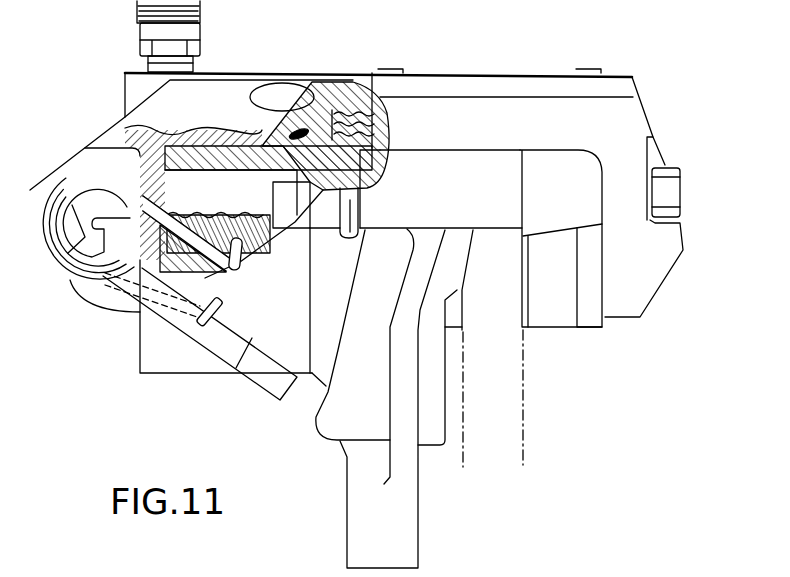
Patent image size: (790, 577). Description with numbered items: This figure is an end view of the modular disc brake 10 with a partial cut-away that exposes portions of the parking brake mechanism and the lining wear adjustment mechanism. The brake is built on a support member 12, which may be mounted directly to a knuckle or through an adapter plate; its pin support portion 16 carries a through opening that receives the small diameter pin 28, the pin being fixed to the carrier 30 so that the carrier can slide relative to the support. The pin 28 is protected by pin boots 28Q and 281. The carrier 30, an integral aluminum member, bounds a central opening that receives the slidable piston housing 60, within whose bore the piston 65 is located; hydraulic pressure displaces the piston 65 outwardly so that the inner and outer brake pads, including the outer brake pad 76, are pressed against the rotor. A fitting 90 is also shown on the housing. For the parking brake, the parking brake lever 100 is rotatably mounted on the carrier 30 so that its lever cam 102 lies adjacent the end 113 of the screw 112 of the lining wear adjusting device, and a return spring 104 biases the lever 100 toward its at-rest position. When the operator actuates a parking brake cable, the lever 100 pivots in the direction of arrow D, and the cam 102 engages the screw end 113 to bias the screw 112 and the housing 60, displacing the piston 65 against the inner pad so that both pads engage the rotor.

The modular disc brake 10 is at (420, 52).
The support member 12 is at (418, 510).
The pin support portion 16 is at (453, 207).
The small diameter pin 28 is at (670, 193).
The pin boot 28Q is at (590, 207).
The carrier 30 is at (505, 139).
The piston housing 60 is at (297, 70).
The piston 65 is at (257, 172).
The outer brake pad 76 is at (585, 329).
The fitting nut 90 is at (140, 12).
The parking brake lever 100 is at (223, 340).
The lever cam 102 is at (58, 267).
The return spring 104 is at (203, 323).
The screw 112 is at (193, 215).
The screw end 113 is at (110, 250).
The pin boot 281 is at (313, 240).
The arrow D is at (253, 393).